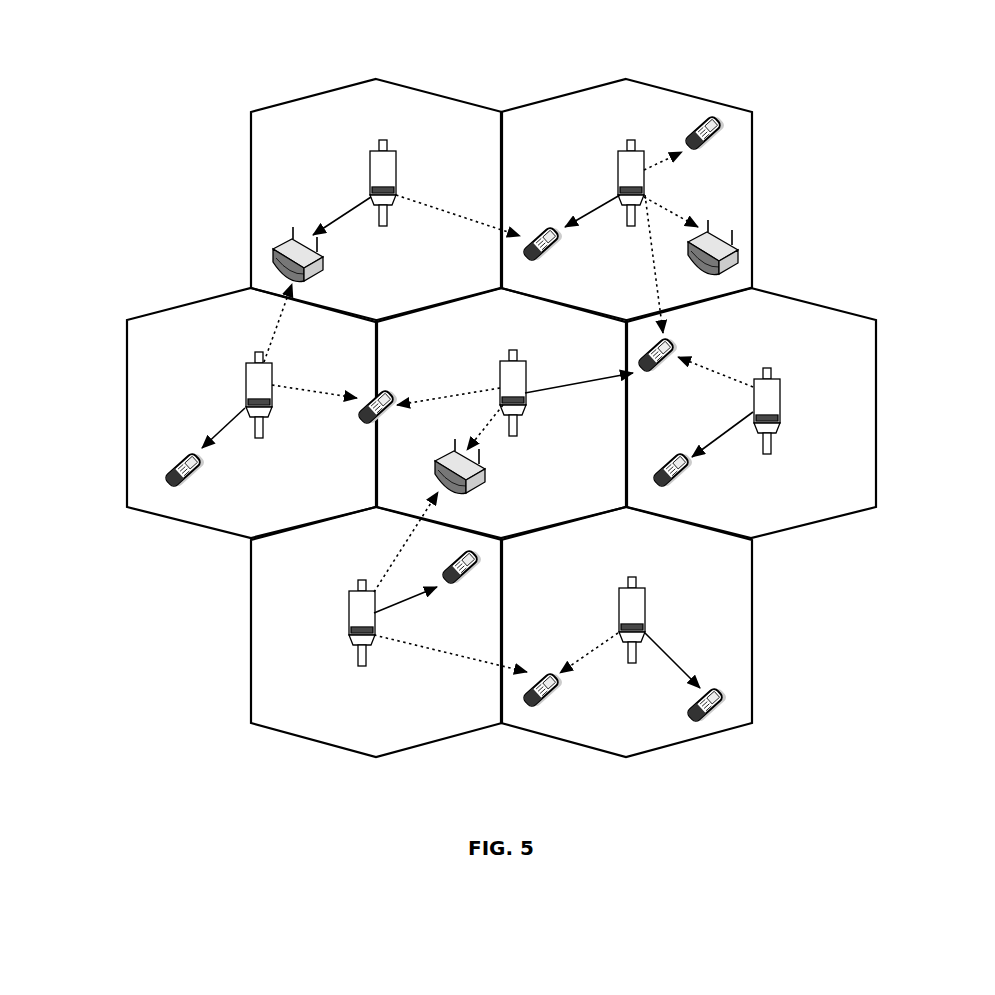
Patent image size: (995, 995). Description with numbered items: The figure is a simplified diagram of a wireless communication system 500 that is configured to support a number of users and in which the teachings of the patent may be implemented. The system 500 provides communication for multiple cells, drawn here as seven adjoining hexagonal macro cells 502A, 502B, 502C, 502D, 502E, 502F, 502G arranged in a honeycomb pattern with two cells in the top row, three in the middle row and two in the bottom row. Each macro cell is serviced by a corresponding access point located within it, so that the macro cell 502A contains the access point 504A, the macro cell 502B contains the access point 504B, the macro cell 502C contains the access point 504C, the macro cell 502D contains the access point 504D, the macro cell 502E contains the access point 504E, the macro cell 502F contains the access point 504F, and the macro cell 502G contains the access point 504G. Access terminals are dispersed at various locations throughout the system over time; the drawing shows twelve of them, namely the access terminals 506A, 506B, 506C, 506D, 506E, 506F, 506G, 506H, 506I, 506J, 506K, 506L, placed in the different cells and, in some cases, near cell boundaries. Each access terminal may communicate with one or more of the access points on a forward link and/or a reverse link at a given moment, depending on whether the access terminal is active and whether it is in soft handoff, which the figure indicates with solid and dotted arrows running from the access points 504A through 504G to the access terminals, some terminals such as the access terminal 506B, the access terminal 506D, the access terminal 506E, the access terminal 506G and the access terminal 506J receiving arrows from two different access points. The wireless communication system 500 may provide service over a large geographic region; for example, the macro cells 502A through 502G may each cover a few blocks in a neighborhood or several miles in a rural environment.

The wireless communication system 500 is at (521, 56).
The macro cell 502A is at (325, 92).
The macro cell 502B is at (627, 80).
The macro cell 502C is at (127, 413).
The macro cell 502D is at (501, 413).
The macro cell 502E is at (877, 413).
The macro cell 502F is at (251, 627).
The macro cell 502G is at (752, 630).
The access point 504A is at (379, 140).
The access point 504B is at (628, 140).
The access point 504C is at (255, 352).
The access point 504D is at (509, 350).
The access point 504E is at (767, 368).
The access point 504F is at (358, 580).
The access point 504G is at (628, 577).
The access terminal 506A is at (323, 273).
The access terminal 506B is at (550, 257).
The access terminal 506C is at (200, 467).
The access terminal 506D is at (373, 393).
The access terminal 506E is at (673, 343).
The access terminal 506F is at (478, 560).
The access terminal 506G is at (553, 697).
The access terminal 506H is at (715, 258).
The access terminal 506I is at (695, 125).
The access terminal 506J is at (460, 470).
The access terminal 506K is at (690, 463).
The access terminal 506L is at (708, 720).